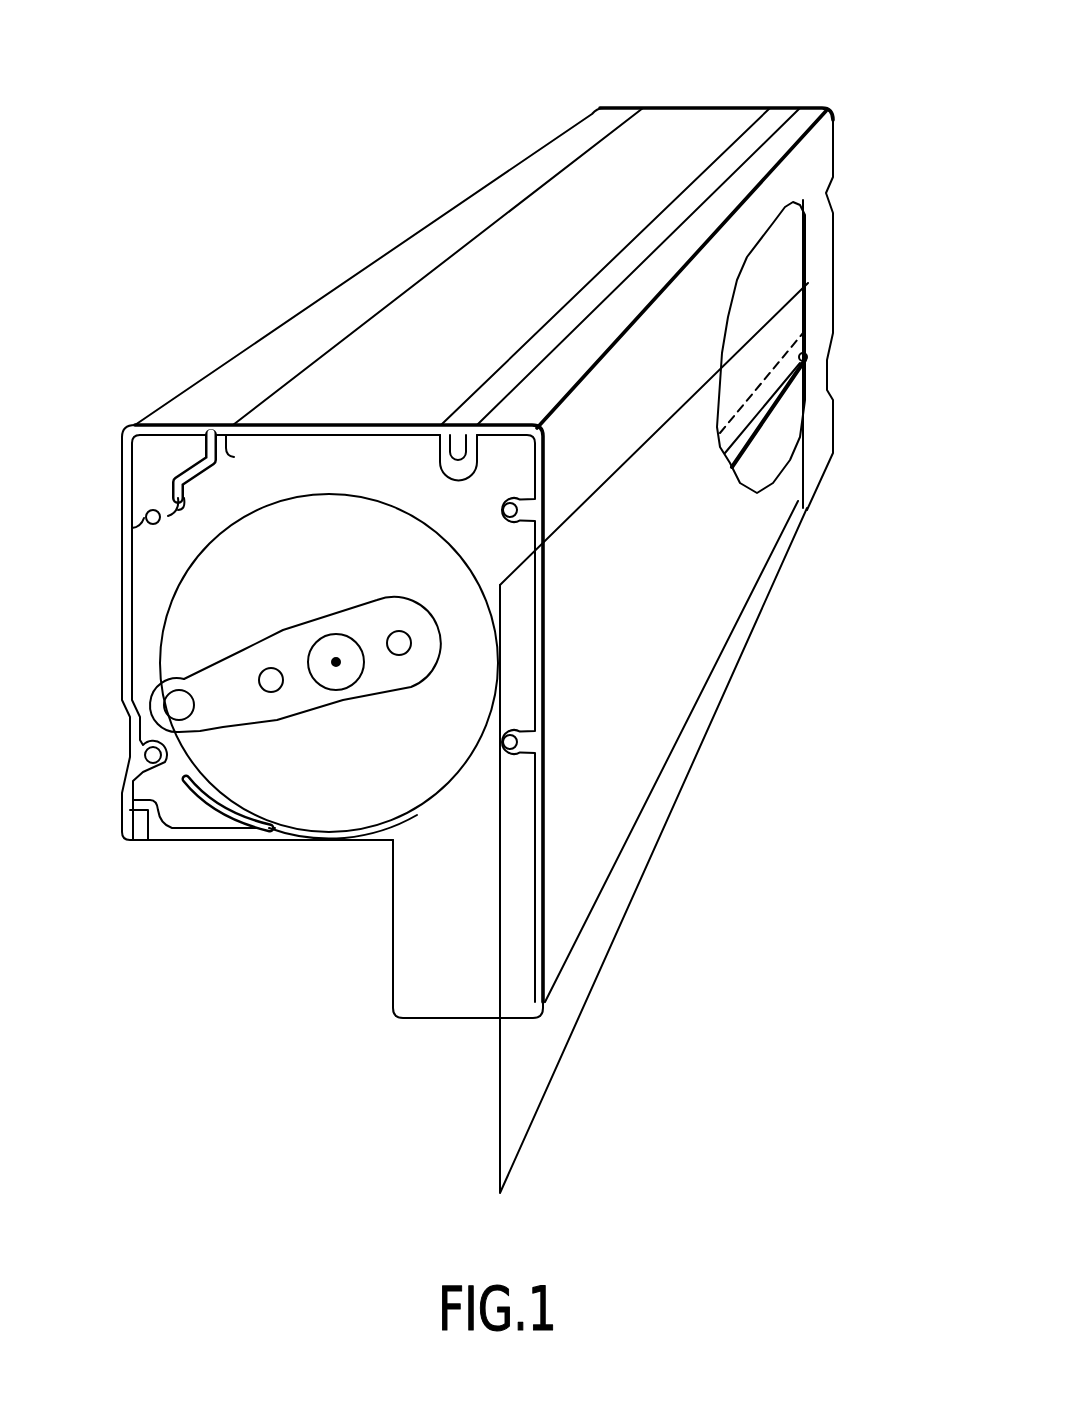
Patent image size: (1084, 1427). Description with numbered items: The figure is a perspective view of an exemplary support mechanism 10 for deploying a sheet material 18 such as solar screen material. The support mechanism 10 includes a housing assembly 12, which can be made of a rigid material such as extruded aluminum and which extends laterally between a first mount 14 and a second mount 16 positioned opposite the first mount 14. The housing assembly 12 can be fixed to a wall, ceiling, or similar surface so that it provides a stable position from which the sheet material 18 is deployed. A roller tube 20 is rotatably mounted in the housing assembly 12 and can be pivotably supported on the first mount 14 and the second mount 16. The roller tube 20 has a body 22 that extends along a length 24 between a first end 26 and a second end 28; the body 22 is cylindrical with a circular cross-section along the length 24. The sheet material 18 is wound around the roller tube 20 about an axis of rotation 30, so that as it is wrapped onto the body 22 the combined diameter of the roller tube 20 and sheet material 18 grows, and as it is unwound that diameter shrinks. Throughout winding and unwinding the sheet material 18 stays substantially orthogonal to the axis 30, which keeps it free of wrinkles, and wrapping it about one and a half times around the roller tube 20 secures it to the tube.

The support mechanism 10 is at (407, 37).
The housing assembly 12 is at (360, 257).
The first mount 14 is at (395, 942).
The second mount 16 is at (845, 185).
The sheet material 18 is at (592, 985).
The roller tube 20 is at (326, 580).
The body 22 is at (322, 813).
The length 24 is at (627, 462).
The first end 26 is at (158, 632).
The second end 28 is at (805, 237).
The axis of rotation 30 is at (338, 666).